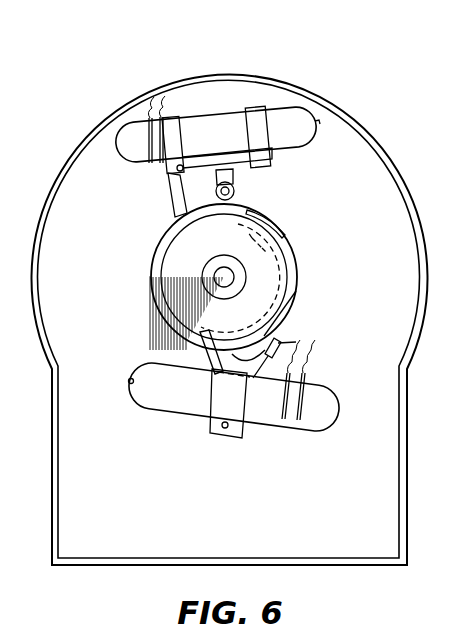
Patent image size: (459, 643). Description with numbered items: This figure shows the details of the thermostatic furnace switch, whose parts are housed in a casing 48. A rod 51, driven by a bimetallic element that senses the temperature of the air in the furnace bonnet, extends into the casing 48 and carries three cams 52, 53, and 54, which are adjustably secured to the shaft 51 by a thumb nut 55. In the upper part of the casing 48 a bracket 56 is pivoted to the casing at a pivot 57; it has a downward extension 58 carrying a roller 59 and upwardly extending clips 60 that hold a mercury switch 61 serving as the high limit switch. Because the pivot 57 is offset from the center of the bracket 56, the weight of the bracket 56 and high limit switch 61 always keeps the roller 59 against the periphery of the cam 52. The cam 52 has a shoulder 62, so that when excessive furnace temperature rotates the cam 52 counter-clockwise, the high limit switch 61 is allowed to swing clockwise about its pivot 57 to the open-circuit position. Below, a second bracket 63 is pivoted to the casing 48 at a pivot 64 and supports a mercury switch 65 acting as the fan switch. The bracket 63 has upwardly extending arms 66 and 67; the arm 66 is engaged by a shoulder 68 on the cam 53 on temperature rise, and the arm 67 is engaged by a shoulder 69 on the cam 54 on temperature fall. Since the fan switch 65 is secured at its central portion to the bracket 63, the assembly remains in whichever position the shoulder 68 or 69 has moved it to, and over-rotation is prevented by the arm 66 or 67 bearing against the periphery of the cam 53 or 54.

The casing 48 is at (416, 231).
The rod 51 is at (222, 276).
The cam 52 is at (166, 226).
The cam 53 is at (168, 302).
The cam 54 is at (288, 253).
The thumb nut 55 is at (213, 282).
The bracket 56 is at (255, 167).
The pivot 57 is at (176, 170).
The downward extension 58 is at (220, 181).
The roller 59 is at (237, 192).
The clips 60 is at (250, 108).
The mercury switch 61 is at (302, 128).
The shoulder 62 is at (283, 226).
The bracket 63 is at (245, 432).
The pivot 64 is at (220, 431).
The mercury switch 65 is at (311, 394).
The arm 66 is at (251, 368).
The arm 67 is at (210, 356).
The shoulder 68 is at (291, 306).
The shoulder 69 is at (281, 340).